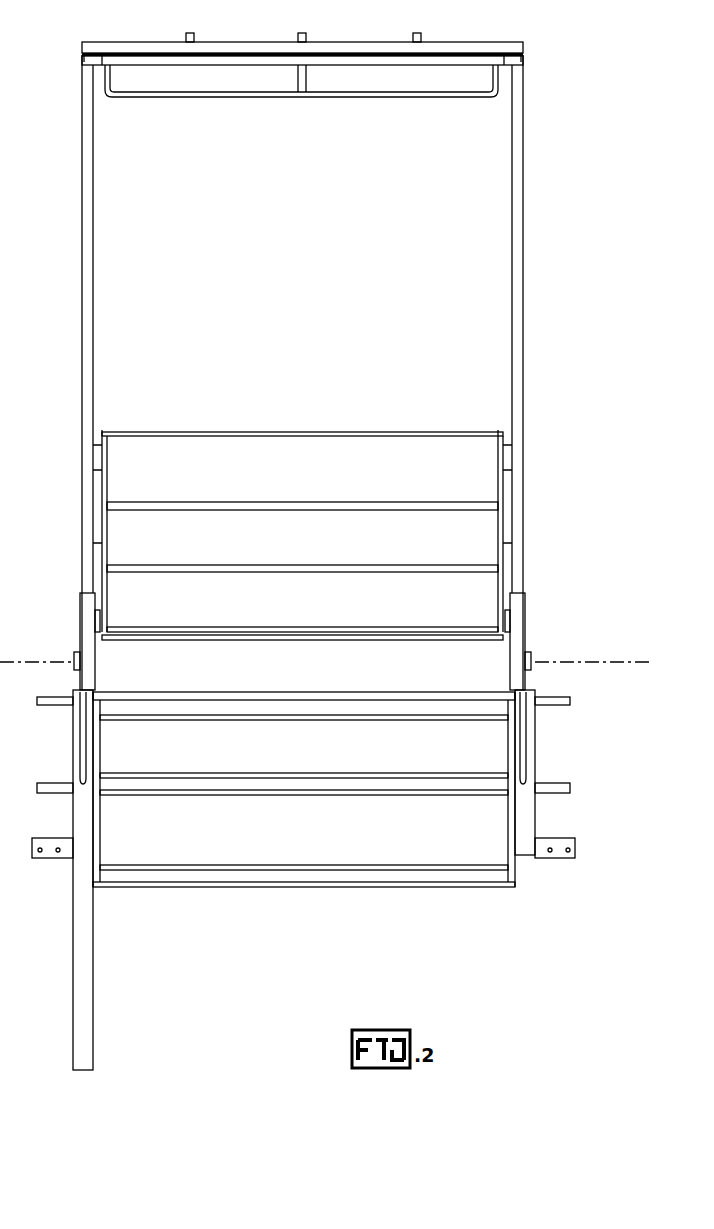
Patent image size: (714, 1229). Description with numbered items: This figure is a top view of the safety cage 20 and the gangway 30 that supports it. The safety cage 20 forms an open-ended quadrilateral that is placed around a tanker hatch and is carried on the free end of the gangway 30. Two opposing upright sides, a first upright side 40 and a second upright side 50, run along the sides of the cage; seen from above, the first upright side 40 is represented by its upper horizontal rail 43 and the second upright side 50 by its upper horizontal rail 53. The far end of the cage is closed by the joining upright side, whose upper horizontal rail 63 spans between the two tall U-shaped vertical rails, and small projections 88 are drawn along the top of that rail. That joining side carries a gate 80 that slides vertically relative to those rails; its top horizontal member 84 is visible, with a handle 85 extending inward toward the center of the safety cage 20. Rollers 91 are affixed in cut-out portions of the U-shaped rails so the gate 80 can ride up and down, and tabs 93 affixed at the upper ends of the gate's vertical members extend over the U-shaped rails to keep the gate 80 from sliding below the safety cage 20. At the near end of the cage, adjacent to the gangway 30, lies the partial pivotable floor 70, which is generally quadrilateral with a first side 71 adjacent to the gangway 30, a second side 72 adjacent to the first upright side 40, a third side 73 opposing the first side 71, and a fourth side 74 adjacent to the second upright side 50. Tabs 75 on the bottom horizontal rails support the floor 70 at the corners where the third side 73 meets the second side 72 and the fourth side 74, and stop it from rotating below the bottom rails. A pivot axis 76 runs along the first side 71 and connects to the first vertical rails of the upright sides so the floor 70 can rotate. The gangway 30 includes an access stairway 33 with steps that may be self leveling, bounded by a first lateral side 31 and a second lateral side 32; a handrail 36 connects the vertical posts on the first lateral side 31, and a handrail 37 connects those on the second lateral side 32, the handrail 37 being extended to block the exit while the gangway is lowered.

The safety cage 20 is at (335, 372).
The gangway 30 is at (305, 872).
The first lateral side 31 is at (528, 680).
The second lateral side 32 is at (78, 684).
The access stairway 33 is at (418, 844).
The handrail 36 is at (528, 806).
The handrail 37 is at (82, 950).
The first upright side 40 is at (535, 372).
The upper horizontal rail 43 is at (522, 205).
The second upright side 50 is at (71, 372).
The upper horizontal rail 53 is at (90, 145).
The upper horizontal rail 63 is at (478, 46).
The partial pivotable floor 70 is at (305, 538).
The first side 71 is at (372, 632).
The second side 72 is at (508, 548).
The third side 73 is at (362, 432).
The fourth side 74 is at (100, 535).
The tabs 75 is at (100, 442).
The pivot axis 76 is at (10, 662).
The gate 80 is at (301, 97).
The top horizontal member 84 is at (301, 97).
The handle 85 is at (205, 98).
The mounting tabs 88 is at (300, 34).
The roller 91 is at (85, 58).
The tabs 93 is at (90, 68).